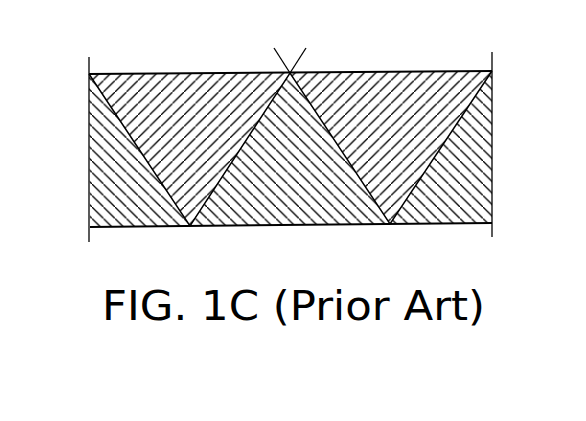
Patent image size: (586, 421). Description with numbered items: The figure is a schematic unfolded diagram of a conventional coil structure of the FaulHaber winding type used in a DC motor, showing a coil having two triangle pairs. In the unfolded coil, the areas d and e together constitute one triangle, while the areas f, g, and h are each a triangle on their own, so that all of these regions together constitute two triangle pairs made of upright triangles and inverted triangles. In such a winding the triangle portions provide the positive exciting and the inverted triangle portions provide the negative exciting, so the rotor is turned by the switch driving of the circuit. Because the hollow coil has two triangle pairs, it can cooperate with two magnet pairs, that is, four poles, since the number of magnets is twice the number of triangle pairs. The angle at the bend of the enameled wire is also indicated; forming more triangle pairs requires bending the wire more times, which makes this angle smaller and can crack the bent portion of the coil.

The area d is at (98, 185).
The area e is at (475, 166).
The area f is at (193, 82).
The area g is at (288, 210).
The area h is at (386, 80).